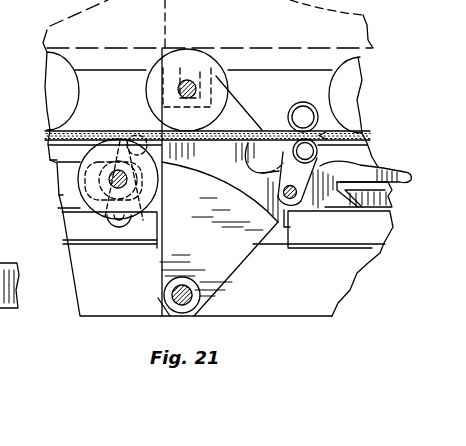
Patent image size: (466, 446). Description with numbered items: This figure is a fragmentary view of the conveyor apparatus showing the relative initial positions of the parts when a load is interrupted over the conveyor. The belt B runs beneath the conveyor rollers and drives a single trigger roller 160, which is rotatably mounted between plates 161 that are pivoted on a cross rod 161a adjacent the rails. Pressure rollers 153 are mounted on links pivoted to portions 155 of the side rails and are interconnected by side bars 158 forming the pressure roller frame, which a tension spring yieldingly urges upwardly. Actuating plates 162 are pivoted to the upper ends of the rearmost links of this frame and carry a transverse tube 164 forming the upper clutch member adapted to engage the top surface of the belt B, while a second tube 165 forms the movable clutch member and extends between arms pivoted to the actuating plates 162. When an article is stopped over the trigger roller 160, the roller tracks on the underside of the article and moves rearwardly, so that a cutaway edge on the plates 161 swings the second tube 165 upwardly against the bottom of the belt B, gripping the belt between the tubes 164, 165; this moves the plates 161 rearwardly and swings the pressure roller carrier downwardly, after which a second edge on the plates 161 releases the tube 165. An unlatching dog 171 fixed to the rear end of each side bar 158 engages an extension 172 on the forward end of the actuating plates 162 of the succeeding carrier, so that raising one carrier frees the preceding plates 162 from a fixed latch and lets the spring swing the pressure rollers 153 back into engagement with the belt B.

The belt B is at (88, 131).
The trigger roller 160 is at (188, 50).
The transverse tube 164 is at (319, 95).
The second tube 165 is at (368, 142).
The extension 172 is at (408, 173).
The unlatching dog 171 is at (385, 197).
The side bars 158 is at (62, 183).
The pressure rollers 153 is at (84, 188).
The portions of the side rails 155 is at (86, 244).
The actuating plates 162 is at (212, 162).
The plates 161 is at (226, 262).
The cross rod 161a is at (192, 296).